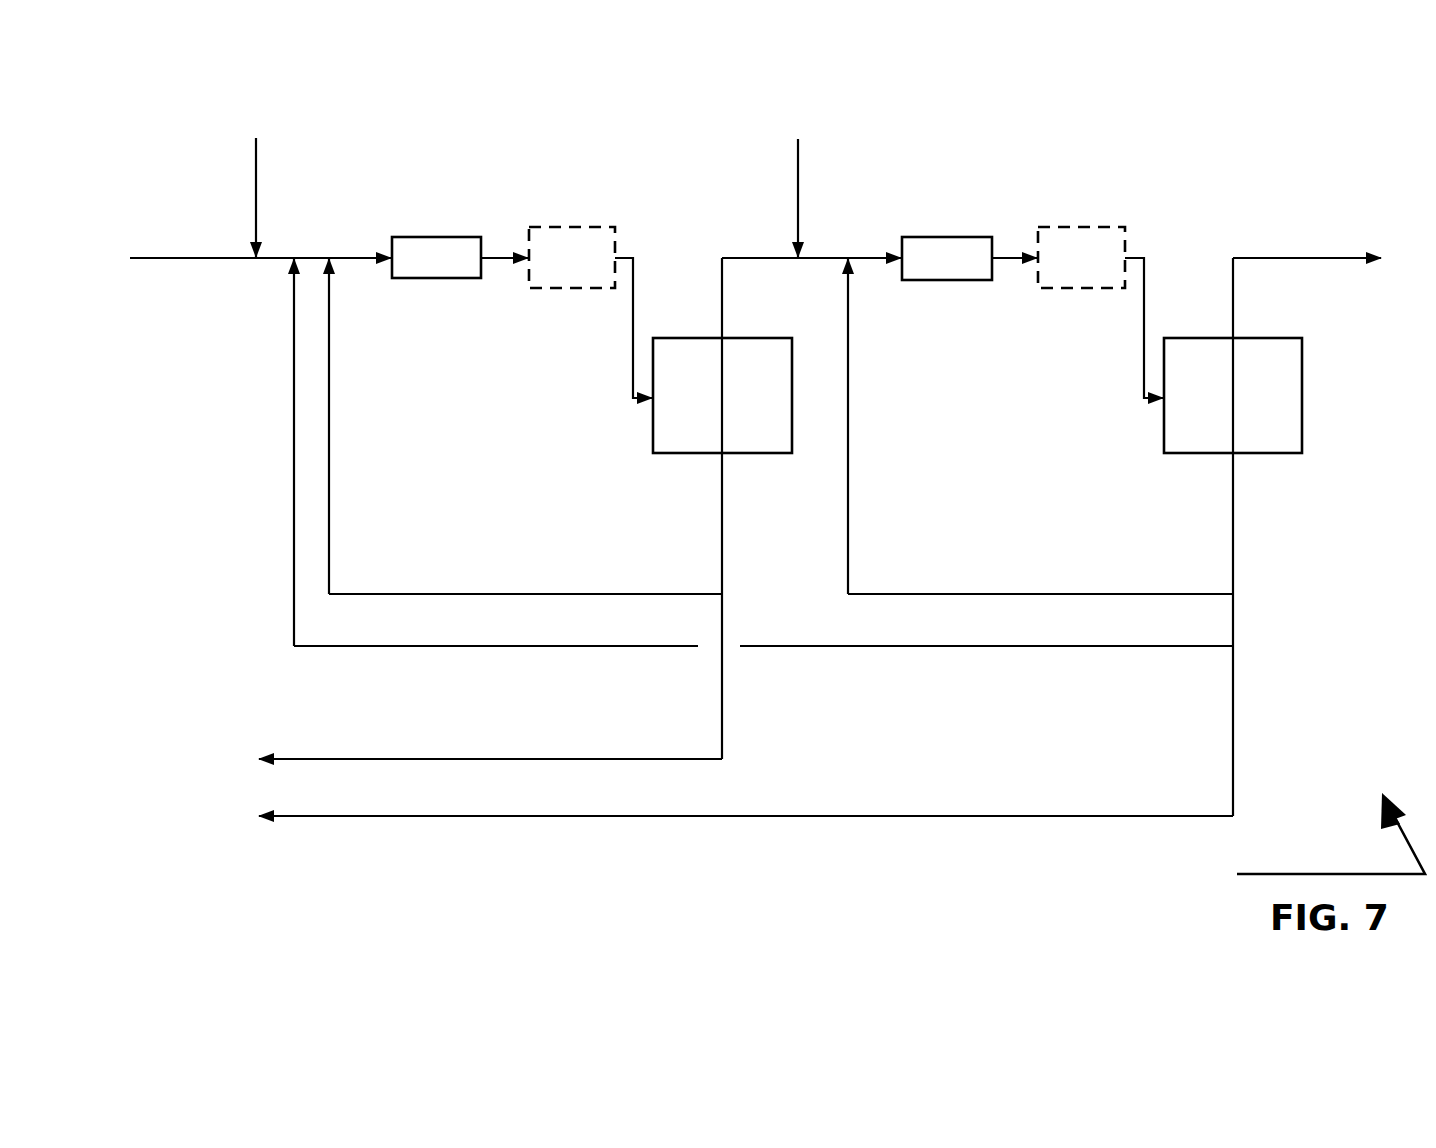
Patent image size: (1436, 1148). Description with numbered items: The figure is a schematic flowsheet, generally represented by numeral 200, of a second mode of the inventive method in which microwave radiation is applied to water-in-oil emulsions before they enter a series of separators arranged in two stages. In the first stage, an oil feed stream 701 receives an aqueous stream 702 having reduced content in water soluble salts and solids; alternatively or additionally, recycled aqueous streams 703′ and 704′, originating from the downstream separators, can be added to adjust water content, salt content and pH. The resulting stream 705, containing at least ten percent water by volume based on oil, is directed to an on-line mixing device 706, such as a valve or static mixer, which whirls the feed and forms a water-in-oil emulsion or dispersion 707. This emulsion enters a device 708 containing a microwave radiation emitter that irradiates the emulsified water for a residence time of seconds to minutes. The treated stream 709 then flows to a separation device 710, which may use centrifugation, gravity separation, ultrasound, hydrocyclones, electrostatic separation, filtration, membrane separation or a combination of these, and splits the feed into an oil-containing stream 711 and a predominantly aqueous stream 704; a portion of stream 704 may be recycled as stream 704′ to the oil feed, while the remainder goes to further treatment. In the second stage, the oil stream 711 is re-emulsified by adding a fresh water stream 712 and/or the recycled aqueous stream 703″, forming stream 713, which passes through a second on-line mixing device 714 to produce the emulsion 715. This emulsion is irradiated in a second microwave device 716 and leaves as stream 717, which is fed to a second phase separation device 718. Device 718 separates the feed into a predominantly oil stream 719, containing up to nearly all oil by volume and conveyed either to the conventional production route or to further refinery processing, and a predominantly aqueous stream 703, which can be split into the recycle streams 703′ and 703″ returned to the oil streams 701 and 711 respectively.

The oil feed stream 701 is at (190, 272).
The aqueous stream 702 is at (248, 214).
The recycled aqueous stream 703′ is at (278, 492).
The aqueous stream 704′ is at (349, 407).
The stream 705 is at (377, 254).
The on-line mixing device 706 is at (437, 229).
The water-in-oil emulsion/dispersion 707 is at (497, 255).
The microwave radiation device 708 is at (572, 226).
The stream 709 is at (641, 275).
The separation device 710 is at (630, 433).
The aqueous stream 704 is at (712, 499).
The oil-containing stream 711 is at (752, 254).
The fresh water stream 712 is at (804, 172).
The stream 713 is at (883, 255).
The on-line mixing device 714 is at (940, 191).
The water-in-oil emulsion/dispersion 715 is at (1003, 245).
The microwave radiation device 716 is at (1072, 199).
The stream 717 is at (1151, 293).
The phase separation device 718 is at (1162, 437).
The oil stream 719 is at (1270, 251).
The aqueous stream 703 is at (1231, 504).
The flowsheet 200 is at (1331, 833).